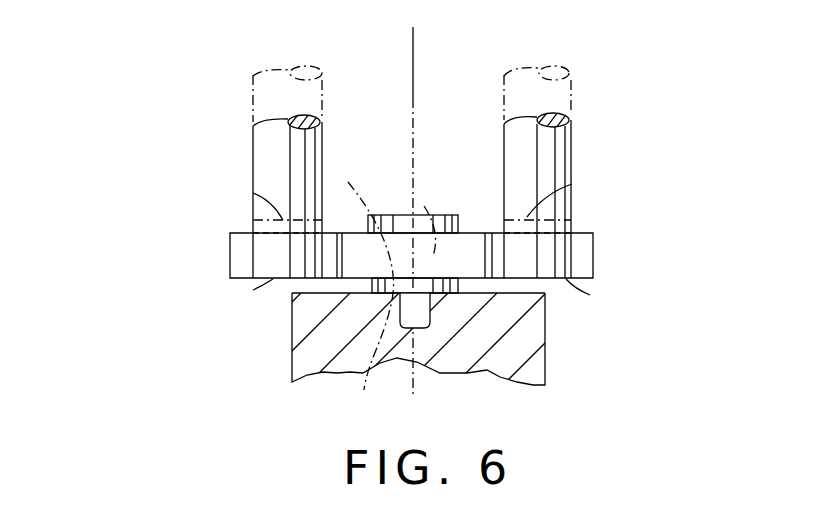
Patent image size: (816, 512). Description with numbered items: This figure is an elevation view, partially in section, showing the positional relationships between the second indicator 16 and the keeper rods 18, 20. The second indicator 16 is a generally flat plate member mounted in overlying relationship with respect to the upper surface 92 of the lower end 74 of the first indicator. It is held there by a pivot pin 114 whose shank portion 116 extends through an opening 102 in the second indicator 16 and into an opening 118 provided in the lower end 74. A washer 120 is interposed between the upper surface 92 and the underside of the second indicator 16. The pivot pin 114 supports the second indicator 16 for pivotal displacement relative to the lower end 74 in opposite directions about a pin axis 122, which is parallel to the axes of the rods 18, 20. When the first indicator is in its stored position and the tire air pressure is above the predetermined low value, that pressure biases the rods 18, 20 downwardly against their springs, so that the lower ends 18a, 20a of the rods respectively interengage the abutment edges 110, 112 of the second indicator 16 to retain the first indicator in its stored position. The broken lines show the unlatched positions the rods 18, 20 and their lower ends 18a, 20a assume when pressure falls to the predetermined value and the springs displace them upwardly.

The second indicator 16 is at (378, 237).
The rod 18 is at (570, 148).
The lower end of rod 18a is at (572, 184).
The rod 20 is at (252, 150).
The lower end of rod 20a is at (252, 193).
The lower end of first indicator 74 is at (280, 348).
The upper surface 92 is at (290, 290).
The opening 102 is at (424, 206).
The abutment edge 110 is at (578, 253).
The abutment edge 112 is at (240, 253).
The pivot pin 114 is at (398, 190).
The shank portion 116 is at (367, 274).
The opening 118 is at (364, 390).
The washer 120 is at (448, 295).
The pin axis 122 is at (411, 52).